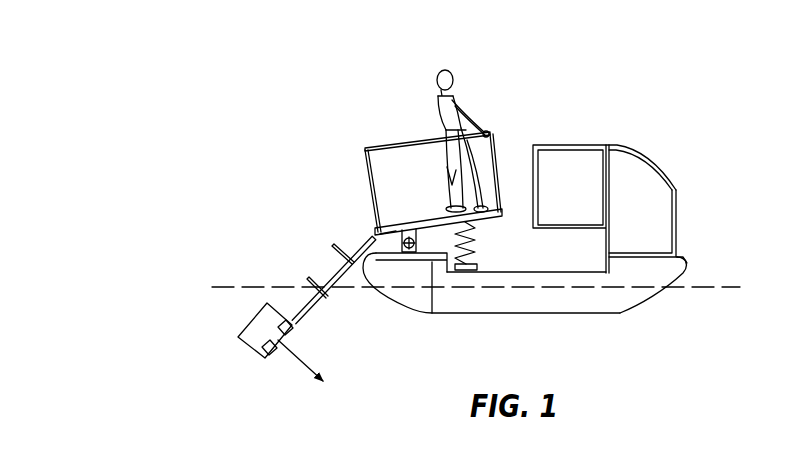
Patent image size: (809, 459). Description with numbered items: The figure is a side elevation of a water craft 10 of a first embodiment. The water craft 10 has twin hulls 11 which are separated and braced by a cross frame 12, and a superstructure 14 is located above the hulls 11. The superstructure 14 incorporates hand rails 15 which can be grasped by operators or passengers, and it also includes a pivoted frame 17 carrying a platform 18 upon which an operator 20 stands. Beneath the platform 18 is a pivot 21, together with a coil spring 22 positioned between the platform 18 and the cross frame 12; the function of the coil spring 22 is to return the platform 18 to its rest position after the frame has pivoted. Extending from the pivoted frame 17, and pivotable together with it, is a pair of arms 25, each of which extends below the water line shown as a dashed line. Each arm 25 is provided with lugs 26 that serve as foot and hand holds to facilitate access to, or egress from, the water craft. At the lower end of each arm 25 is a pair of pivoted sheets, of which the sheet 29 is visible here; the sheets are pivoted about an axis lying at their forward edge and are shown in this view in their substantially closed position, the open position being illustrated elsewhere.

The water craft 10 is at (711, 213).
The hulls 11 is at (620, 313).
The cross frame 12 is at (432, 262).
The superstructure 14 is at (600, 132).
The hand rails 15 is at (652, 157).
The pivoted frame 17 is at (389, 105).
The platform 18 is at (402, 221).
The operator 20 is at (466, 98).
The pivot 21 is at (386, 244).
The coil spring 22 is at (483, 251).
The arms 25 is at (316, 310).
The lugs 26 is at (330, 239).
The pivoted sheet 29 is at (256, 338).